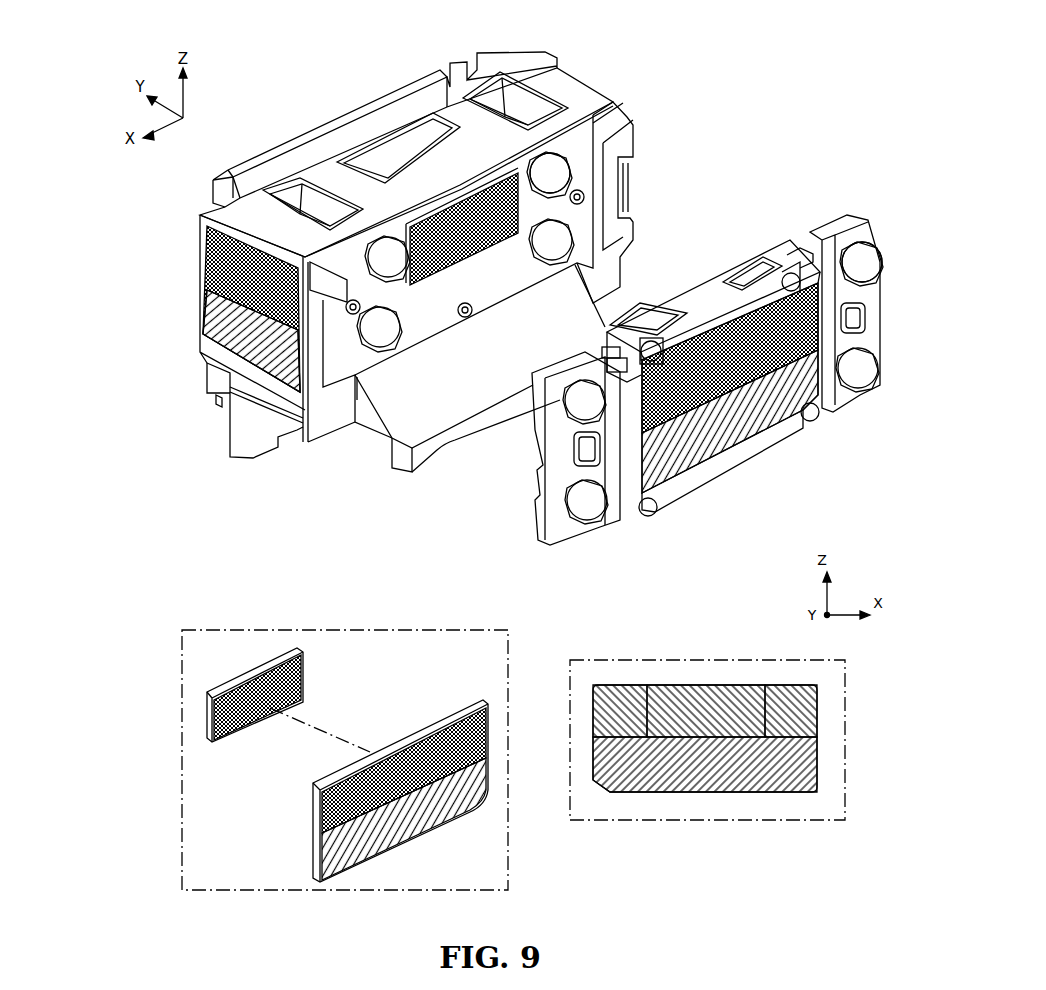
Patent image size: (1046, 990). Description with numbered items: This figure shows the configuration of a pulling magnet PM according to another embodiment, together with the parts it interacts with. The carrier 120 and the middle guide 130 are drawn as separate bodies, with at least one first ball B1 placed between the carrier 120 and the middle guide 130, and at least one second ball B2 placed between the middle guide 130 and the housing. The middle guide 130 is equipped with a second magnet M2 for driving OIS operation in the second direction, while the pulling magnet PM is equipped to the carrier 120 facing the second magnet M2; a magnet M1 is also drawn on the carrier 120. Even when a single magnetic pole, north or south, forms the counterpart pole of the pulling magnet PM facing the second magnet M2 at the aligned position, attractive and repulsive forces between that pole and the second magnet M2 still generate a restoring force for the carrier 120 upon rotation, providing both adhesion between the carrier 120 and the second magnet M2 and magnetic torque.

The carrier 120 is at (323, 177).
The middle guide 130 is at (702, 297).
The pulling magnet PM is at (450, 233).
The first magnet (M1-2 sub-magnet) M1 is at (214, 311).
The second magnet M2 is at (713, 432).
The first ball B1 is at (552, 172).
The second ball B2 is at (862, 262).